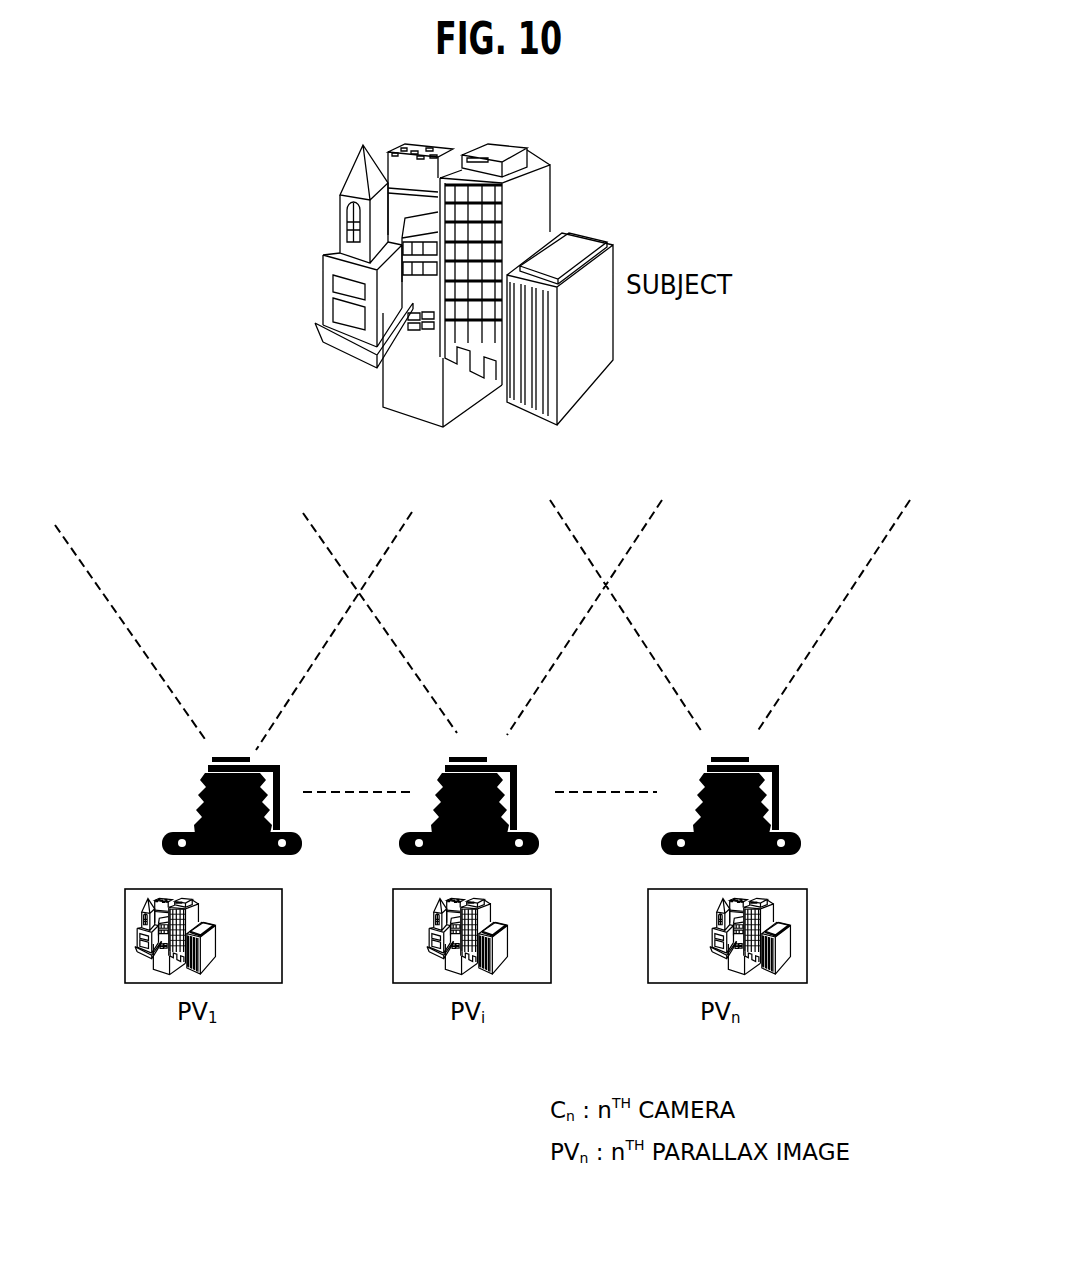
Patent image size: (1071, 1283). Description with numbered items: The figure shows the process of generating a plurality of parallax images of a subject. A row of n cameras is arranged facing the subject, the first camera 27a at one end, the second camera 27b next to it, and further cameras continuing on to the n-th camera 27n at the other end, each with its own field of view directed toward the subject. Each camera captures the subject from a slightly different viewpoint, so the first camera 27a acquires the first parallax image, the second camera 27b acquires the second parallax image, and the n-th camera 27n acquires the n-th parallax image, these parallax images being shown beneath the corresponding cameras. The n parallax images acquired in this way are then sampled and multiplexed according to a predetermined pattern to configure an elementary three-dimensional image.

The camera 27a is at (177, 805).
The camera 27b is at (430, 762).
The camera 27n is at (792, 805).